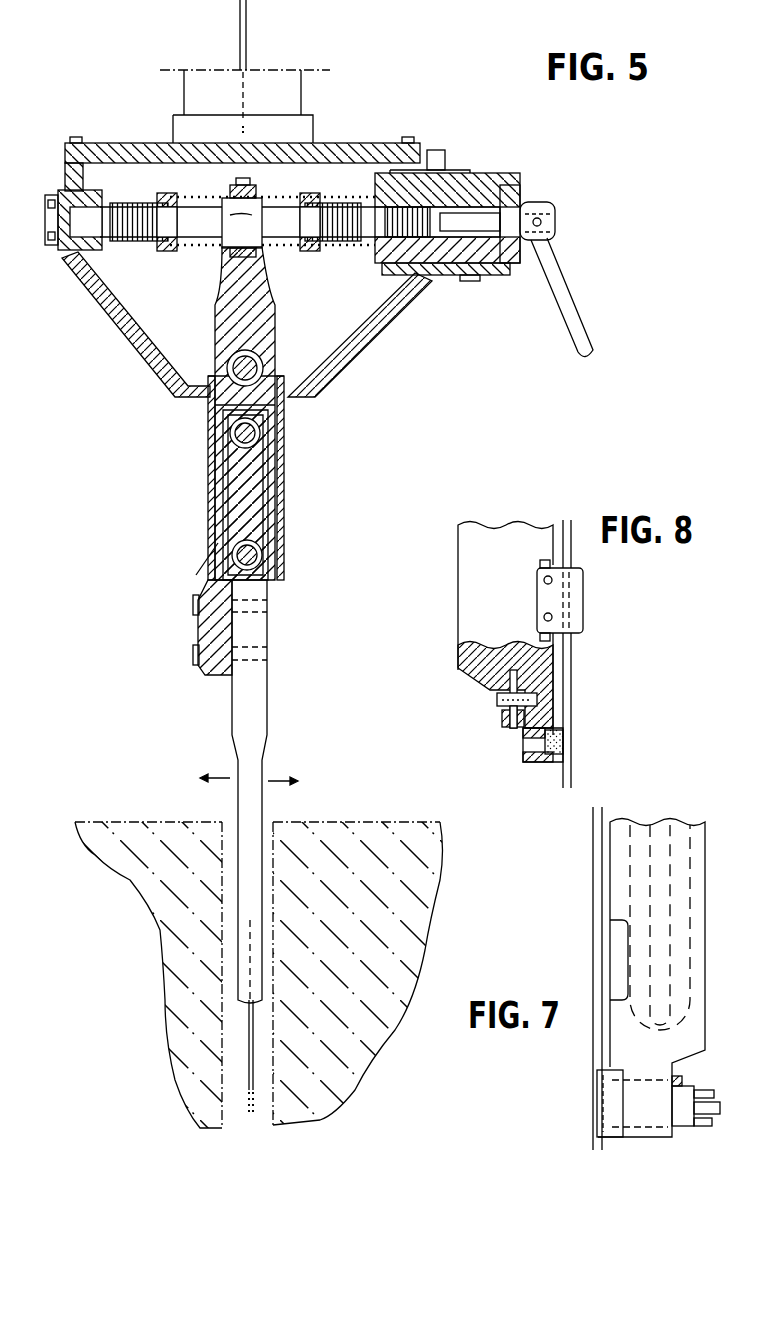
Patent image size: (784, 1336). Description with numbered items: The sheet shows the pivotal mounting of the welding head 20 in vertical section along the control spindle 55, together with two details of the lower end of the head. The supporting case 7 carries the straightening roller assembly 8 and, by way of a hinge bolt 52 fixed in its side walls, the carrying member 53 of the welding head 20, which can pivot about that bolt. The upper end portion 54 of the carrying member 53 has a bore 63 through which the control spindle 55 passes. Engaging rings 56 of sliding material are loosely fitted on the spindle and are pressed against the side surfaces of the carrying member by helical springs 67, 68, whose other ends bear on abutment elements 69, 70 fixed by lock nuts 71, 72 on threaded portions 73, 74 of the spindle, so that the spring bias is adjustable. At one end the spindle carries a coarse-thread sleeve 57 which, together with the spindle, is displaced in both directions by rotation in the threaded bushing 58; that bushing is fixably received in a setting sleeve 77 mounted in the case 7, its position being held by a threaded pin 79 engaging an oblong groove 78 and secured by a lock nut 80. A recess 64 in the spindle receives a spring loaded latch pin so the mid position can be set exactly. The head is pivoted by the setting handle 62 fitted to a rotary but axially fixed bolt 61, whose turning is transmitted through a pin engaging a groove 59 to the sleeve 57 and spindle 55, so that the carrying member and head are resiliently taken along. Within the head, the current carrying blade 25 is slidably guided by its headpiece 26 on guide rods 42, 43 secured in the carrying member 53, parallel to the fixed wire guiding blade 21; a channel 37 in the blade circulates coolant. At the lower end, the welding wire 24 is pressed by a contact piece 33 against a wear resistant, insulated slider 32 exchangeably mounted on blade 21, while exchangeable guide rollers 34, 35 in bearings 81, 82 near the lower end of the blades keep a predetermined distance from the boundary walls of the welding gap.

In FIG. 5, the supporting case 7 is at (118, 336).
In FIG. 5, the straightening roller assembly 8 is at (303, 128).
In FIG. 5, the welding head 20 is at (272, 640).
In FIG. 7, the welding head 20 is at (712, 975).
In FIG. 8, the fixed wire guiding blade 21 is at (465, 605).
In FIG. 5, the welding wire 24 is at (240, 38).
In FIG. 8, the welding wire 24 is at (566, 690).
In FIG. 7, the welding wire 24 is at (596, 903).
In FIG. 5, the current carrying blade 25 is at (258, 718).
In FIG. 7, the current carrying blade 25 is at (700, 915).
In FIG. 5, the headpiece 26 is at (256, 494).
In FIG. 8, the slider 32 is at (548, 765).
In FIG. 7, the contact piece 33 is at (606, 1117).
In FIG. 7, the guide roller 34 is at (720, 1108).
In FIG. 8, the guide roller 35 is at (497, 700).
In FIG. 7, the coolant channel 37 is at (682, 828).
In FIG. 5, the guide rod 42 is at (262, 432).
In FIG. 5, the guide rod 43 is at (258, 552).
In FIG. 5, the hinge bolt 52 is at (240, 360).
In FIG. 5, the carrying member 53 is at (238, 488).
In FIG. 5, the upper end portion 54 is at (255, 318).
In FIG. 5, the control spindle 55 is at (70, 265).
In FIG. 5, the engaging rings 56 is at (218, 250).
In FIG. 5, the coarse-thread sleeve 57 is at (470, 192).
In FIG. 5, the threaded bushing 58 is at (470, 276).
In FIG. 5, the groove 59 is at (503, 220).
In FIG. 5, the bolt 61 is at (500, 223).
In FIG. 5, the setting handle 62 is at (578, 352).
In FIG. 5, the bore 63 is at (230, 315).
In FIG. 5, the recess 64 is at (275, 200).
In FIG. 5, the helical spring 67 is at (182, 197).
In FIG. 5, the helical spring 68 is at (290, 197).
In FIG. 5, the abutment element 69 is at (160, 196).
In FIG. 5, the abutment element 70 is at (330, 200).
In FIG. 5, the lock nut 71 is at (142, 202).
In FIG. 5, the lock nut 72 is at (355, 240).
In FIG. 5, the threaded portion 73 is at (131, 238).
In FIG. 5, the threaded portion 74 is at (367, 200).
In FIG. 5, the setting sleeve 77 is at (445, 276).
In FIG. 5, the oblong groove 78 is at (430, 150).
In FIG. 5, the threaded pin 79 is at (437, 163).
In FIG. 5, the lock nut 80 is at (452, 175).
In FIG. 7, the bearing 81 is at (682, 1082).
In FIG. 8, the bearing 82 is at (525, 725).